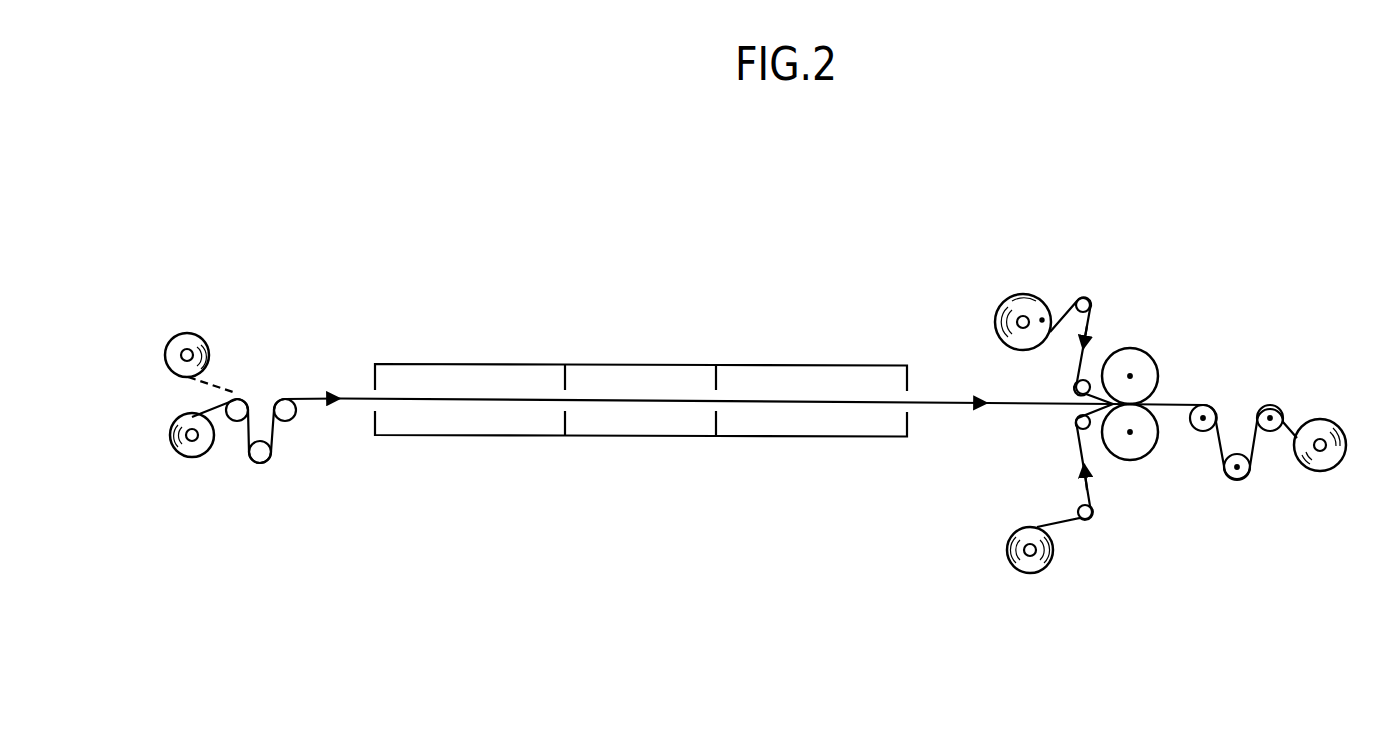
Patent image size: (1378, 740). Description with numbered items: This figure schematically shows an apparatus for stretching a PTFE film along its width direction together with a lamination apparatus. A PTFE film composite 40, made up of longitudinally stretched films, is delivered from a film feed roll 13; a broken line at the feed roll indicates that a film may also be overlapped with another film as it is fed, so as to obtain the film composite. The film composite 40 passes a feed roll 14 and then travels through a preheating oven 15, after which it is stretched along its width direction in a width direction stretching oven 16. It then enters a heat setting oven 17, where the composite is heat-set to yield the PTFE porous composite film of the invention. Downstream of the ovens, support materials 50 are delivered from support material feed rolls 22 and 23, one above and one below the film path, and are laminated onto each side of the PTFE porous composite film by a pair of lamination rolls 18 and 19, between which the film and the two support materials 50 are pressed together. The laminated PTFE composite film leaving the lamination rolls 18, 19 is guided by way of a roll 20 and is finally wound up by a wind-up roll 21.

The film feed roll 13 is at (183, 458).
The feed roll 14 is at (260, 466).
The PTFE film composite 40 is at (318, 395).
The preheating oven 15 is at (477, 440).
The oven for stretching along a width direction 16 is at (643, 422).
The heat setting oven 17 is at (815, 422).
The lamination roll 18 is at (1140, 358).
The lamination roll 19 is at (1130, 462).
The roll 20 is at (1235, 481).
The wind-up roll 21 is at (1320, 471).
The feed roll for support material 22 is at (1008, 297).
The feed roll for support material 23 is at (1012, 565).
The support material 50 is at (1067, 308).